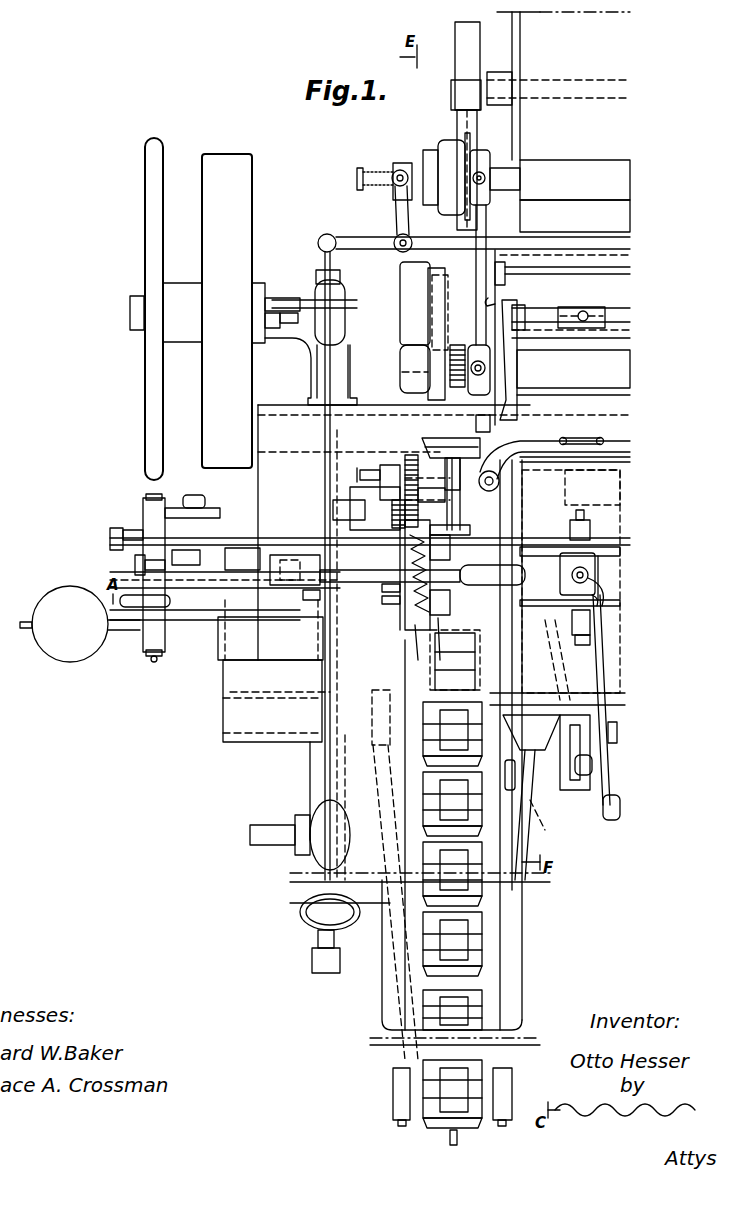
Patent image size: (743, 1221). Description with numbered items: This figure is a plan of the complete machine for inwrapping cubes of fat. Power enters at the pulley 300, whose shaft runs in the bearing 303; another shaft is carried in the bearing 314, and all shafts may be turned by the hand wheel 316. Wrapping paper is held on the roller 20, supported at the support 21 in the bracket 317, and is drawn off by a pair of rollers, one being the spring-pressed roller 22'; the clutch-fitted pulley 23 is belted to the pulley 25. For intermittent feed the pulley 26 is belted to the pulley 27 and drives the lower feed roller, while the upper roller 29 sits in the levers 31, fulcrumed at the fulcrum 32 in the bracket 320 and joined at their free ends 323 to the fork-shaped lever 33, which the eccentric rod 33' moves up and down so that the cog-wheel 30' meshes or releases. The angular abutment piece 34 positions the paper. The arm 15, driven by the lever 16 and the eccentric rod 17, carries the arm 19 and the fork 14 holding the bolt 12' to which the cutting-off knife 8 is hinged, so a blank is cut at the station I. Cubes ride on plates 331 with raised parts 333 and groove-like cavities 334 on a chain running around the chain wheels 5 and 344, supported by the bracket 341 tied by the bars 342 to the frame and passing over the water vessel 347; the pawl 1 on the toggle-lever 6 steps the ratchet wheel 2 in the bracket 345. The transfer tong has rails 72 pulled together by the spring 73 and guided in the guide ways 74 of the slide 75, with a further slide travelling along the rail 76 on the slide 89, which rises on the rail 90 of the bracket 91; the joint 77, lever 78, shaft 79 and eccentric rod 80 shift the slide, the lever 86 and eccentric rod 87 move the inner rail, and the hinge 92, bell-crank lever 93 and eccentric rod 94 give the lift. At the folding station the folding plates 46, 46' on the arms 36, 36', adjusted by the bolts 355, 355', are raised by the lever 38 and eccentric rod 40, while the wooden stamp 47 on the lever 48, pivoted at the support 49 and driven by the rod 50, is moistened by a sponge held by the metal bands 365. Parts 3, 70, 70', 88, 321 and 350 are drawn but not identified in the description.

The pawl 1 is at (390, 465).
The ratchet wheel 2 is at (393, 520).
The gear 3 is at (411, 455).
The chain wheel 5 is at (475, 640).
The toggle-lever 6 is at (372, 470).
The cutting-off knife 8 is at (540, 470).
The bolt 12' is at (432, 432).
The fork 14 is at (447, 481).
The arm 15 is at (484, 490).
The lever 16 is at (542, 740).
The eccentric rod 17 is at (515, 776).
The arm 19 is at (579, 440).
The roller 20 is at (603, 439).
The roller support 21 is at (451, 92).
The roller 22' is at (560, 196).
The pulley 23 is at (438, 142).
The pulley 25 is at (436, 308).
The pulley 26 is at (402, 366).
The pulley 27 is at (400, 280).
The roller 29 is at (573, 369).
The cog-wheel 30' is at (467, 358).
The lever 31 is at (508, 403).
The lever fulcrum 32 is at (476, 425).
The fork-shaped lever 33 is at (571, 311).
The eccentric rod 33' is at (589, 305).
The angular abutment piece 34 is at (617, 727).
The arm 36 is at (597, 525).
The arm 36' is at (623, 662).
The lever 38 is at (569, 763).
The eccentric rod 40 is at (598, 770).
The folding plate 46 is at (579, 542).
The folding plate 46' is at (606, 622).
The wooden stamp 47 is at (597, 570).
The lever 48 is at (590, 638).
The lever support 49 is at (592, 765).
The rod 50 is at (659, 827).
The rod 70 is at (370, 709).
The collar 70' is at (461, 524).
The rail 72 is at (438, 626).
The spring 73 is at (415, 626).
The guide way 74 is at (405, 612).
The slide 75 is at (382, 590).
The rail 76 is at (382, 600).
The joint 77 is at (236, 538).
The lever 78 is at (116, 528).
The shaft 79 is at (165, 530).
The eccentric rod 80 is at (204, 500).
The lever 86 is at (135, 565).
The eccentric rod 87 is at (196, 560).
The shaft 88 is at (380, 586).
The slide 89 is at (242, 559).
The rail 90 is at (290, 560).
The bracket 91 is at (270, 720).
The hinge 92 is at (305, 598).
The bell-crank lever 93 is at (188, 626).
The eccentric rod 94 is at (145, 603).
The pulley 300 is at (215, 311).
The bearing 303 is at (344, 336).
The bearing 314 is at (322, 808).
The hand wheel 316 is at (145, 190).
The bracket 317 is at (457, 116).
The bracket 320 is at (488, 221).
The frame 321 is at (571, 581).
The lever free end 323 is at (490, 302).
The plate 331 is at (480, 945).
The raised part 333 is at (476, 952).
The groove-like cavity 334 is at (460, 925).
The bracket 341 is at (512, 1085).
The bar 342 is at (545, 830).
The chain wheel 344 is at (454, 1140).
The bracket 345 is at (340, 506).
The water vessel 347 is at (522, 1009).
The link 350 is at (568, 660).
The bolt 355 is at (592, 487).
The bolt 355' is at (616, 592).
The metal band 365 is at (600, 557).
The station I is at (480, 576).